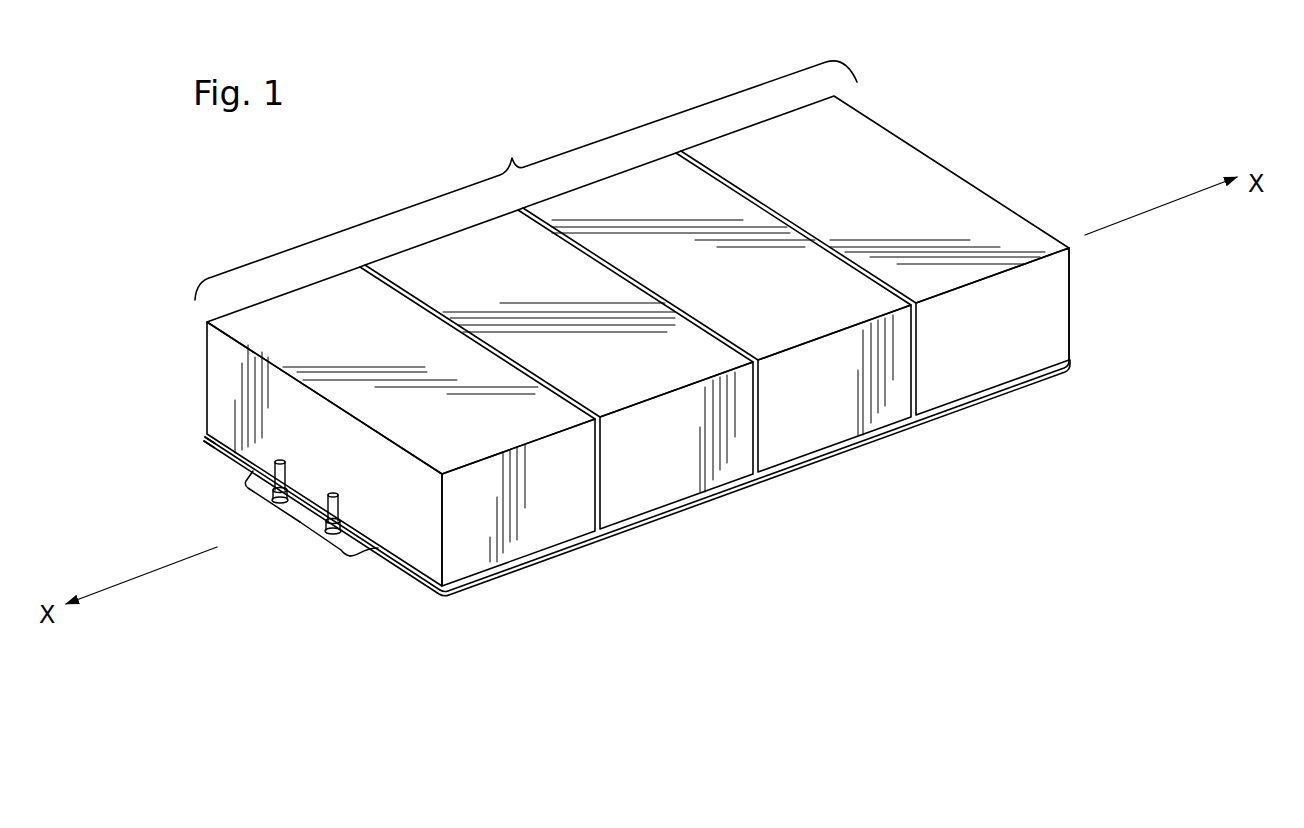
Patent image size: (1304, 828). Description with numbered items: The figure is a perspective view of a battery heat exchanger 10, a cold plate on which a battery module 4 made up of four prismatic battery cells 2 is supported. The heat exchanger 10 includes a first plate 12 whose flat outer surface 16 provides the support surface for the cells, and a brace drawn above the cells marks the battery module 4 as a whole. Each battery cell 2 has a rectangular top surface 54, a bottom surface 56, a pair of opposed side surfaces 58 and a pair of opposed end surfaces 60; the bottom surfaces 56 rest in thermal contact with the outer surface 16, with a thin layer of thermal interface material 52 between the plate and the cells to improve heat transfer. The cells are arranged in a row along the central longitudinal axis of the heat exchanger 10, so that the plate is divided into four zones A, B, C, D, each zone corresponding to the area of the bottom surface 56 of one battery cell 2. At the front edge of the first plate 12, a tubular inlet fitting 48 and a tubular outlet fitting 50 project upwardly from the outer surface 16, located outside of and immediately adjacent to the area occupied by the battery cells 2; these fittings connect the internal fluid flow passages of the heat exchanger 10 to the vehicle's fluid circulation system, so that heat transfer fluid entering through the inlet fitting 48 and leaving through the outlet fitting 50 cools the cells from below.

The battery cell 2 is at (699, 360).
The battery module 4 is at (693, 356).
The heat exchanger 10 is at (641, 374).
The first plate 12 is at (292, 508).
The outer surface 16 is at (313, 513).
The tubular inlet fitting 48 is at (377, 546).
The tubular outlet fitting 50 is at (270, 487).
The thermal interface material 52 is at (205, 430).
The top surface 54 is at (873, 148).
The bottom surface 56 is at (952, 415).
The side surfaces 58 is at (1086, 297).
The end surfaces 60 is at (1045, 342).
The zone A is at (562, 552).
The zone B is at (725, 493).
The zone C is at (878, 437).
The zone D is at (933, 261).